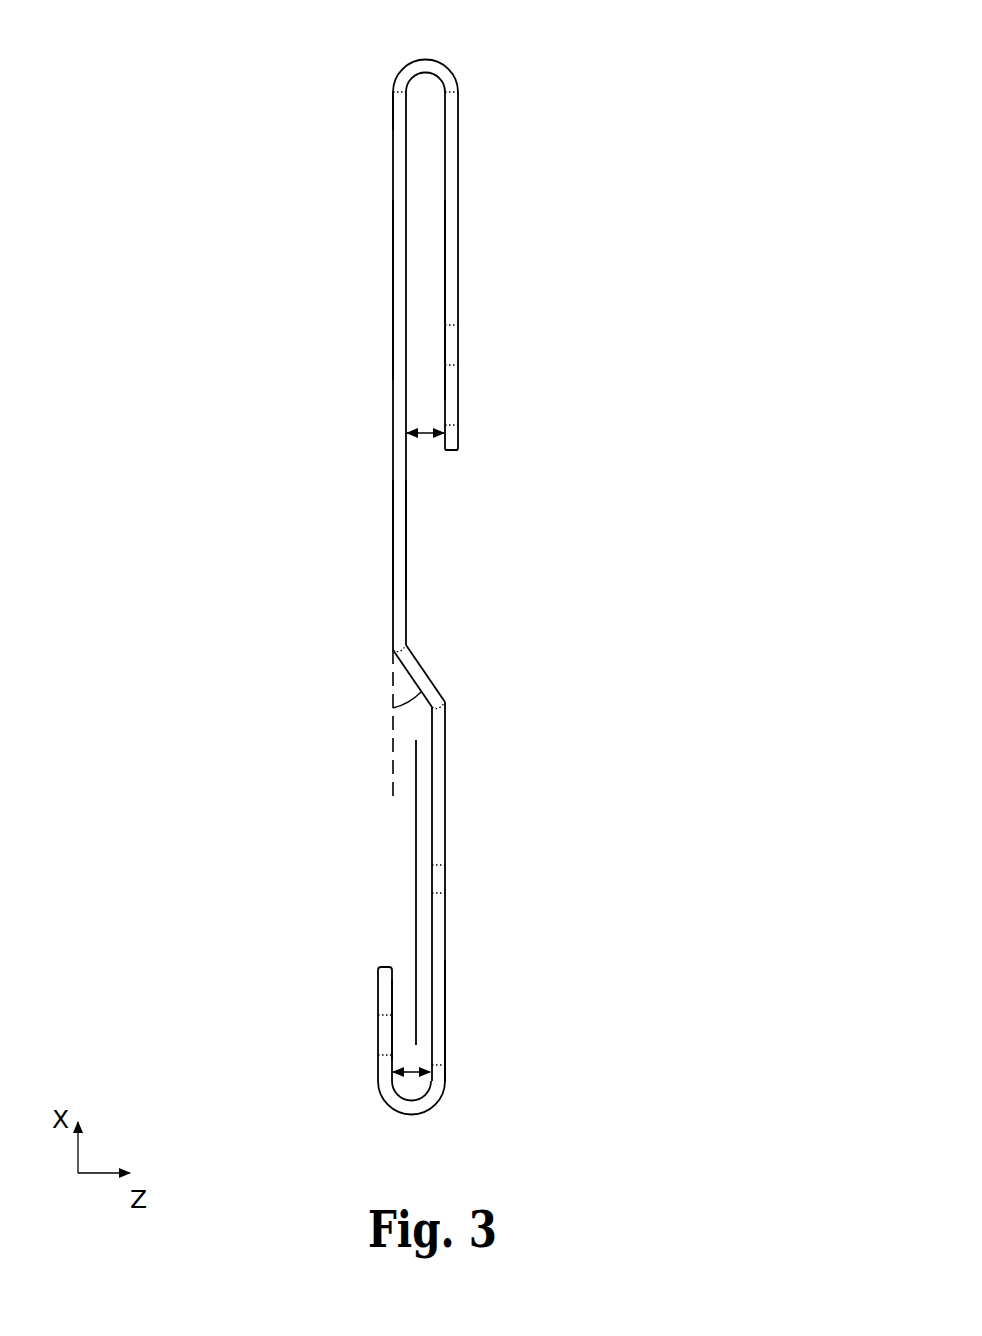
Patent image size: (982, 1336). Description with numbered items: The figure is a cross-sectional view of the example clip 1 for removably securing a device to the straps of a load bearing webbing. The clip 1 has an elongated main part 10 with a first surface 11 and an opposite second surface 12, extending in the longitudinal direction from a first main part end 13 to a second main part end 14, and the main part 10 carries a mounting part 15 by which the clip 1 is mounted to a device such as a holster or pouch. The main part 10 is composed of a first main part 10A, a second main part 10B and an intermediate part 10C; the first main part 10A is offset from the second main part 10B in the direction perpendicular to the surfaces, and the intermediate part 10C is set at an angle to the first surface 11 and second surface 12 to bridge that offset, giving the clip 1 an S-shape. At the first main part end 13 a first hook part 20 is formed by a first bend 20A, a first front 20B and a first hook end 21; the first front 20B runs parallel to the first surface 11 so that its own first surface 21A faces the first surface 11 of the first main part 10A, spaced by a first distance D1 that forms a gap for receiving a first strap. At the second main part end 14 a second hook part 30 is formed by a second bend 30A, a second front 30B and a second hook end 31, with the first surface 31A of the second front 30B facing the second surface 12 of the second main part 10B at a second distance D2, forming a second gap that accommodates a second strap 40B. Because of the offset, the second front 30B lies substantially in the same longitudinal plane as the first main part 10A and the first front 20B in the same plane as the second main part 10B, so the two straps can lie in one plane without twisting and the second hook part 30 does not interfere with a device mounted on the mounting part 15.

The clip 1 is at (772, 176).
The main part 10 is at (353, 657).
The first main part 10A is at (393, 396).
The second main part 10B is at (442, 885).
The intermediate part 10C is at (418, 683).
The first surface 11 is at (406, 552).
The second surface 12 is at (393, 288).
The first main part end 13 is at (393, 92).
The second main part end 14 is at (445, 1070).
The mounting part 15 is at (393, 543).
The first hook part 20 is at (515, 112).
The first bend 20A is at (437, 70).
The first front 20B is at (452, 235).
The first hook end 21 is at (462, 452).
The first surface of the first front 21A is at (446, 285).
The second hook part 30 is at (335, 1091).
The second bend 30A is at (418, 1115).
The second front 30B is at (390, 1012).
The second hook end 31 is at (385, 964).
The first surface of the second front 31A is at (413, 1038).
The second strap 40B is at (416, 842).
The first distance D1 is at (426, 454).
The second distance D2 is at (410, 1075).